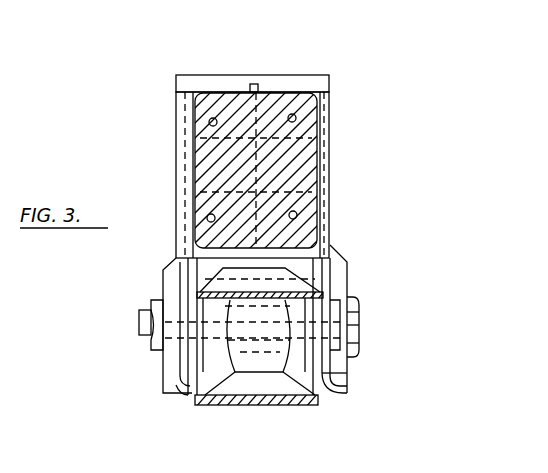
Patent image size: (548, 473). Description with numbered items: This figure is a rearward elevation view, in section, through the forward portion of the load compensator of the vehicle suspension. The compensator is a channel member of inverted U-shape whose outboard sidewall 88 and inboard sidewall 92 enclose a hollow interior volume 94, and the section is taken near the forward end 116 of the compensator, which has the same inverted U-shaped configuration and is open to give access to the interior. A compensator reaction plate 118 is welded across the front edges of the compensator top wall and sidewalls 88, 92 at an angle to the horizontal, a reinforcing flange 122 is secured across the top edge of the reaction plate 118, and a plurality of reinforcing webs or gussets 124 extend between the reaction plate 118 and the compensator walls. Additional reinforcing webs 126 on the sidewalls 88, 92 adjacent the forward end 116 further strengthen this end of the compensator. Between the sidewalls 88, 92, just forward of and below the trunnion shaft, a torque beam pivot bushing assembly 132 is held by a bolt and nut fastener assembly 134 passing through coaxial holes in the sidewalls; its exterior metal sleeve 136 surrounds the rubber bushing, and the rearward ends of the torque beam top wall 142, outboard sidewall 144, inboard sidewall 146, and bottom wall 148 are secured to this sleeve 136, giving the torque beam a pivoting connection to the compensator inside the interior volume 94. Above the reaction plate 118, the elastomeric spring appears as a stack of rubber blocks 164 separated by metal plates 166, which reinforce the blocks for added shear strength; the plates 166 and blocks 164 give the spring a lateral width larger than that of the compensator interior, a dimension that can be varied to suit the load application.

The outboard sidewall 88 is at (343, 333).
The inboard sidewall 92 is at (163, 338).
The hollow interior volume 94 is at (334, 260).
The forward end 116 is at (334, 273).
The compensator reaction plate 118 is at (333, 182).
The reinforcing flange 122 is at (293, 85).
The reinforcing webs 124 is at (237, 88).
The additional reinforcing webs 126 is at (163, 268).
The torque beam pivot bushing assembly 132 is at (362, 305).
The bolt and nut fastener assembly 134 is at (357, 328).
The exterior metal sleeve 136 is at (268, 365).
The torque beam top wall 142 is at (197, 294).
The torque beam outboard sidewall 144 is at (340, 373).
The torque beam inboard sidewall 146 is at (188, 392).
The torque beam bottom wall 148 is at (218, 404).
The rubber blocks 164 is at (333, 103).
The metal plates 166 is at (333, 142).